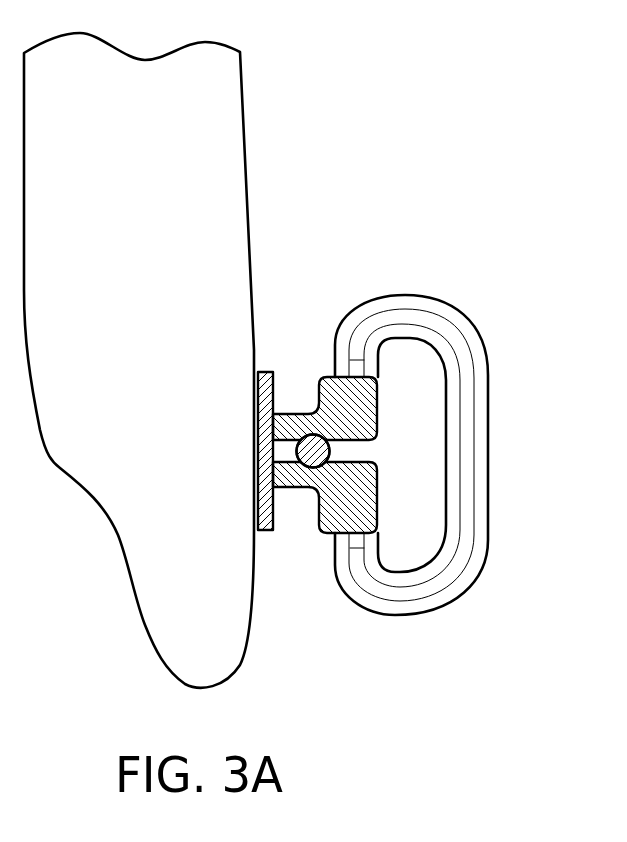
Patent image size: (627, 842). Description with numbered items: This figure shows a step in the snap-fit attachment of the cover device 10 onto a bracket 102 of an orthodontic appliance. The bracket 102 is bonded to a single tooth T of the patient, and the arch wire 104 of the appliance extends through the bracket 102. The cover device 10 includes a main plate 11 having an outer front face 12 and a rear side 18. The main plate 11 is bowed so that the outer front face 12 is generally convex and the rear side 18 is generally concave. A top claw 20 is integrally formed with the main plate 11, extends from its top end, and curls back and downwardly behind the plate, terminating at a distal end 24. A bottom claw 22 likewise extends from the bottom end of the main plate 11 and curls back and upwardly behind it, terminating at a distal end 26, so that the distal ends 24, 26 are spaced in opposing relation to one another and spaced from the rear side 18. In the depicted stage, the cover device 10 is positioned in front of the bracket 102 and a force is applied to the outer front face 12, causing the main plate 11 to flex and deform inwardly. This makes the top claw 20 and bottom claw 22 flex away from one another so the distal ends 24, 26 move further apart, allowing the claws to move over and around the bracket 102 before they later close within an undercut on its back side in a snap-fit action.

The tooth T is at (244, 88).
The cover device 10 is at (455, 446).
The main plate 11 is at (501, 495).
The outer front face 12 is at (481, 393).
The rear side 18 is at (445, 456).
The top claw 20 is at (393, 294).
The bottom claw 22 is at (403, 617).
The distal end 24 is at (358, 375).
The distal end 26 is at (350, 540).
The bracket 102 is at (328, 518).
The arch wire 104 is at (308, 453).